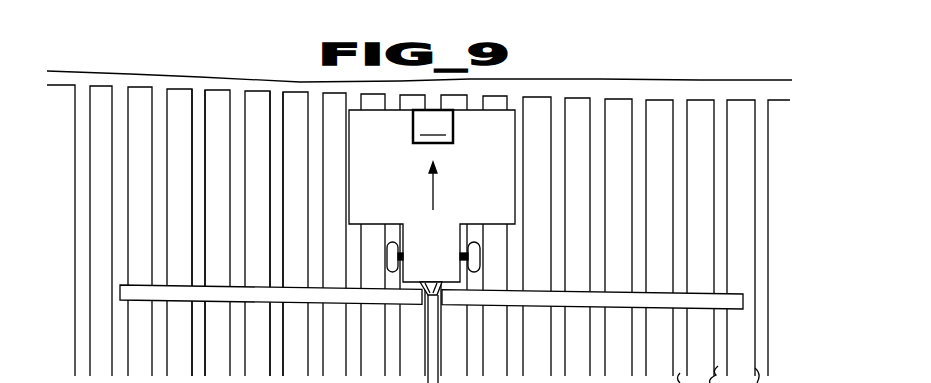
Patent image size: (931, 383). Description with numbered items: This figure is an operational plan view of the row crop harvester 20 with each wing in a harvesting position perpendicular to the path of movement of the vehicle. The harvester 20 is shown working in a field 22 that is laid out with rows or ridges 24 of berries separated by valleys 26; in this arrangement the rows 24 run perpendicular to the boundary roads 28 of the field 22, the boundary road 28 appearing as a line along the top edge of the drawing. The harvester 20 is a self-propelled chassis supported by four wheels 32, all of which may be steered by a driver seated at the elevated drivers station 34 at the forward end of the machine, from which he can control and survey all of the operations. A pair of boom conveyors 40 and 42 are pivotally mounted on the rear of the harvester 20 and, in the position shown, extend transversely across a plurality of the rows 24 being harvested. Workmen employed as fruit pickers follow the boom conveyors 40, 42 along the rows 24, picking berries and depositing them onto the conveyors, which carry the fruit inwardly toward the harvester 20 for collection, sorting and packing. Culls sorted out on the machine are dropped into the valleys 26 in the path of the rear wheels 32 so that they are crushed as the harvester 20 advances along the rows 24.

The row crop harvester 20 is at (522, 102).
The field 22 is at (440, 208).
The rows 24 is at (180, 91).
The valleys 26 is at (277, 96).
The boundary roads 28 is at (83, 71).
The wheels 32 is at (468, 251).
The drivers station 34 is at (433, 126).
The boom conveyor 40 is at (112, 292).
The boom conveyor 42 is at (752, 302).